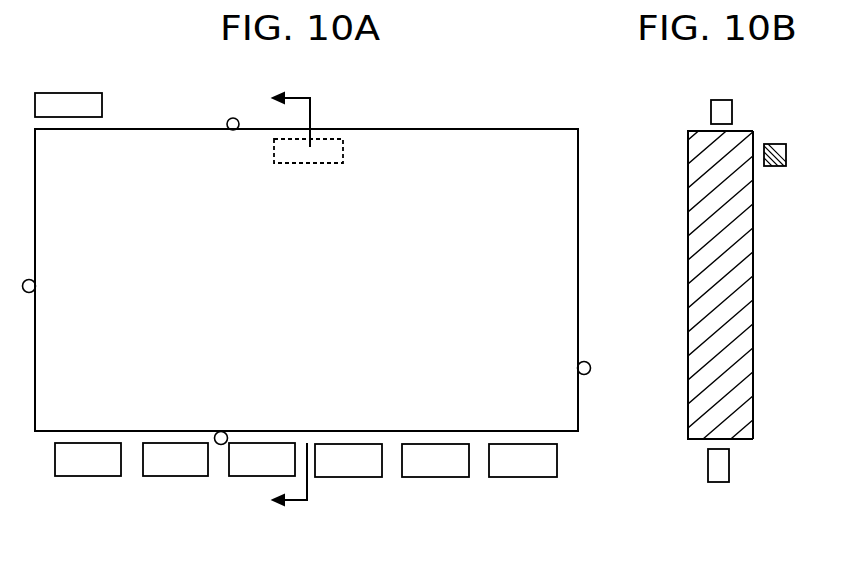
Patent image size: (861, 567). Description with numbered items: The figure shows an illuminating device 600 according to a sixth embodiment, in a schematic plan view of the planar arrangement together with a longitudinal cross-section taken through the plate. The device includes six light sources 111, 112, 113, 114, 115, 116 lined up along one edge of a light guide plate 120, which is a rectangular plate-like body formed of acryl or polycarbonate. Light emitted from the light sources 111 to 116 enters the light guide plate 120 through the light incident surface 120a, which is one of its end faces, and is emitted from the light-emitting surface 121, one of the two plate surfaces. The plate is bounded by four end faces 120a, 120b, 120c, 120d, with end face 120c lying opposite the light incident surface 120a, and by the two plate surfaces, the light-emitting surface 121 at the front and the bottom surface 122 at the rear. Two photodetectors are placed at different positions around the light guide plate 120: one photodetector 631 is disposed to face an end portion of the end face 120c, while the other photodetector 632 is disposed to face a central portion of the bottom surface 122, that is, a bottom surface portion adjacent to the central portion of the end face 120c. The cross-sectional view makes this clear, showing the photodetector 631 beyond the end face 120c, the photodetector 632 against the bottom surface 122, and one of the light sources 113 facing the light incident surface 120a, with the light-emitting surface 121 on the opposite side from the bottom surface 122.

In FIG. 10A, the illuminating device 600 is at (160, 46).
In FIG. 10A, the light source 111 is at (88, 476).
In FIG. 10A, the light source 112 is at (166, 476).
In FIG. 10A, the light source 113 is at (235, 476).
In FIG. 10B, the light source 113 is at (729, 470).
In FIG. 10A, the light source 114 is at (351, 477).
In FIG. 10A, the light source 115 is at (436, 477).
In FIG. 10A, the light source 116 is at (520, 477).
In FIG. 10A, the light guide plate 120 is at (578, 175).
In FIG. 10A, the light incident surface 120a is at (221, 431).
In FIG. 10A, the end face 120b is at (38, 294).
In FIG. 10A, the end face 120c is at (233, 130).
In FIG. 10B, the end face 120c is at (698, 131).
In FIG. 10A, the end face 120d is at (578, 372).
In FIG. 10A, the light-emitting surface 121 is at (318, 292).
In FIG. 10B, the light-emitting surface 121 is at (688, 262).
In FIG. 10B, the bottom surface 122 is at (753, 300).
In FIG. 10A, the photodetector 631 is at (102, 105).
In FIG. 10B, the photodetector 631 is at (732, 112).
In FIG. 10A, the photodetector 632 is at (343, 152).
In FIG. 10B, the photodetector 632 is at (786, 153).